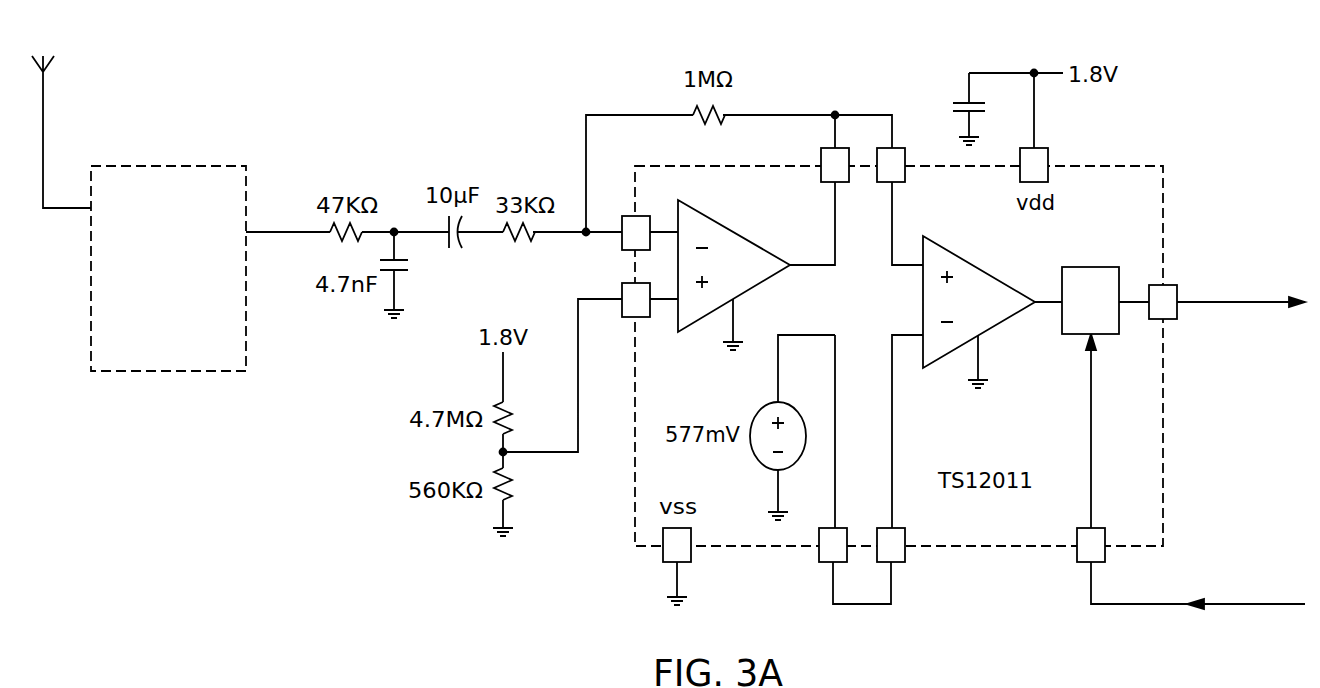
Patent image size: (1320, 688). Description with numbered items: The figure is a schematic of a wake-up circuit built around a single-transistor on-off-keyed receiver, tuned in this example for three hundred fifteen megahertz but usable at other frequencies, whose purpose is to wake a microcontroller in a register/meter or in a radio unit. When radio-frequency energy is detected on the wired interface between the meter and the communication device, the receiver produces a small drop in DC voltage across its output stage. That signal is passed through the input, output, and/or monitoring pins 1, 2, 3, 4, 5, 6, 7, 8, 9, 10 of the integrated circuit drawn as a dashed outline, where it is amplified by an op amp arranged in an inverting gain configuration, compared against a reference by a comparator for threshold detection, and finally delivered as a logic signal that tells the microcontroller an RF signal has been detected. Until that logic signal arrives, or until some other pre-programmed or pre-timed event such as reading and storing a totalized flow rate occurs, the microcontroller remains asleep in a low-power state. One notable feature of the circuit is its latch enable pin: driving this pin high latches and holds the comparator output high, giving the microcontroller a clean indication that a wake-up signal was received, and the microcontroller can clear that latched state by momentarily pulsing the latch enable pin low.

The pin 1 is at (819, 159).
The pin 2 is at (632, 216).
The pin 3 is at (632, 287).
The pin 4 is at (672, 559).
The pin 5 is at (1084, 559).
The pin 6 is at (904, 157).
The pin 7 is at (826, 559).
The pin 8 is at (900, 559).
The pin 9 is at (1176, 311).
The pin 10 is at (1048, 155).